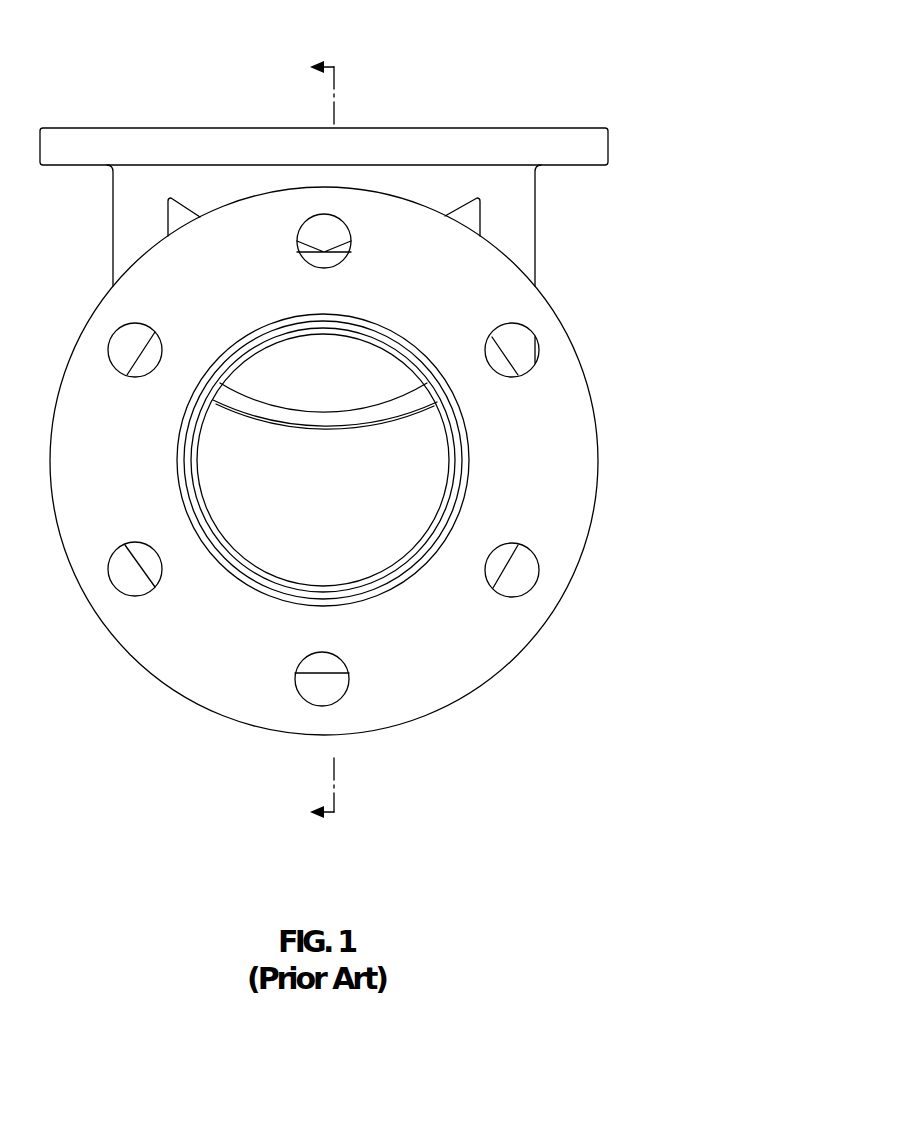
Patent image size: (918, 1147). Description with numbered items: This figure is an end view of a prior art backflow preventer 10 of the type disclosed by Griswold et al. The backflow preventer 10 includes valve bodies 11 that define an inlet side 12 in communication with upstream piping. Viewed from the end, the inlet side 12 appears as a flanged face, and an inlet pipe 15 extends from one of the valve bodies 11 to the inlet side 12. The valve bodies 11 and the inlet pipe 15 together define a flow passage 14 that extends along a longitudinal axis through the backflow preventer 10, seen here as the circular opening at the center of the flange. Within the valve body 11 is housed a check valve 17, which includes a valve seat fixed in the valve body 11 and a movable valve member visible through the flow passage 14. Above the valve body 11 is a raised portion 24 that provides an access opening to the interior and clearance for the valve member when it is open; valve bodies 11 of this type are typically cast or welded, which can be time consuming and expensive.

The backflow preventer 10 is at (547, 58).
The valve body 11 is at (580, 153).
The raised portion 24 is at (522, 232).
The inlet side 12 is at (473, 668).
The inlet pipe 15 is at (462, 462).
The flow passage 14 is at (296, 549).
The check valve 17 is at (357, 388).